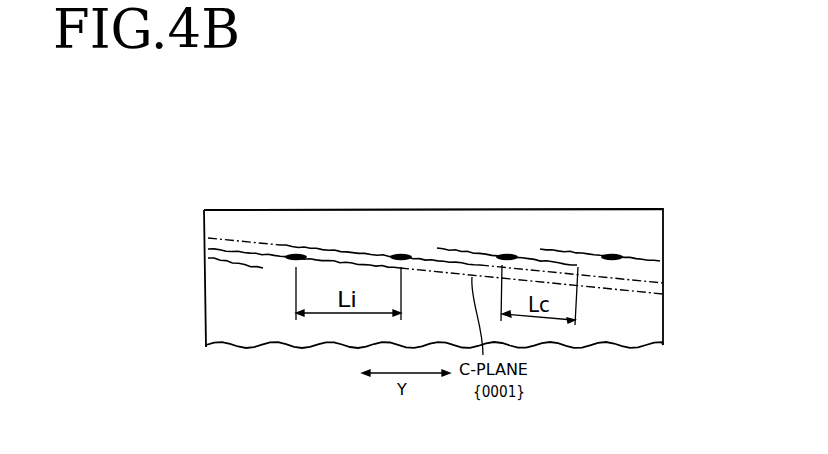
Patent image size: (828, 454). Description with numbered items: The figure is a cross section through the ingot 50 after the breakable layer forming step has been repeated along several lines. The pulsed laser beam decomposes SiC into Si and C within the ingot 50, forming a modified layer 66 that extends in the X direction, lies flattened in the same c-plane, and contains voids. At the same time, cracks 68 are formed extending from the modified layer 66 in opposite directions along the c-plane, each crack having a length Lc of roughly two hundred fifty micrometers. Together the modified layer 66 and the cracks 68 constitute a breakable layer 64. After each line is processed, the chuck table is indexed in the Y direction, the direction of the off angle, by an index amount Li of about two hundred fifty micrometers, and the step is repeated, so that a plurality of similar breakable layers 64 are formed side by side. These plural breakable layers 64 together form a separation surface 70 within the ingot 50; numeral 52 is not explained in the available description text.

The ingot 50 is at (237, 208).
The main surface 52 is at (498, 208).
The breakable layer 64 is at (352, 190).
The modified layer 66 is at (300, 254).
The cracks 68 is at (397, 211).
The separation surface 70 is at (511, 247).